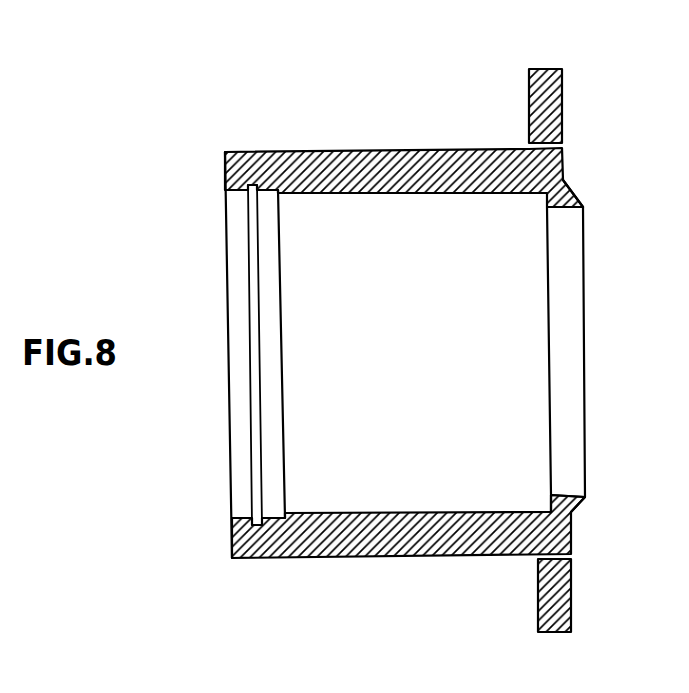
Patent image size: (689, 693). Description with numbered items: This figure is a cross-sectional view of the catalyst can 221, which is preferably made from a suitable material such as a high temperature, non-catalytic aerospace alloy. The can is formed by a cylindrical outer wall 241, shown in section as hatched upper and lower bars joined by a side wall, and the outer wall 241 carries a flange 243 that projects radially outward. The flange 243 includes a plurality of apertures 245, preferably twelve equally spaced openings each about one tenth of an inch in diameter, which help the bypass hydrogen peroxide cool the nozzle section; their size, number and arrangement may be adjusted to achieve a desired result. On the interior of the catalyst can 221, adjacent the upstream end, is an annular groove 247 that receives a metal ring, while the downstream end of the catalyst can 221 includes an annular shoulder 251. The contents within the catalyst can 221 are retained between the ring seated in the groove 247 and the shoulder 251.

The catalyst can 221 is at (358, 108).
The cylindrical outer wall 241 is at (396, 150).
The flange 243 is at (539, 68).
The apertures 245 is at (562, 143).
The annular groove 247 is at (249, 192).
The annular shoulder 251 is at (550, 496).